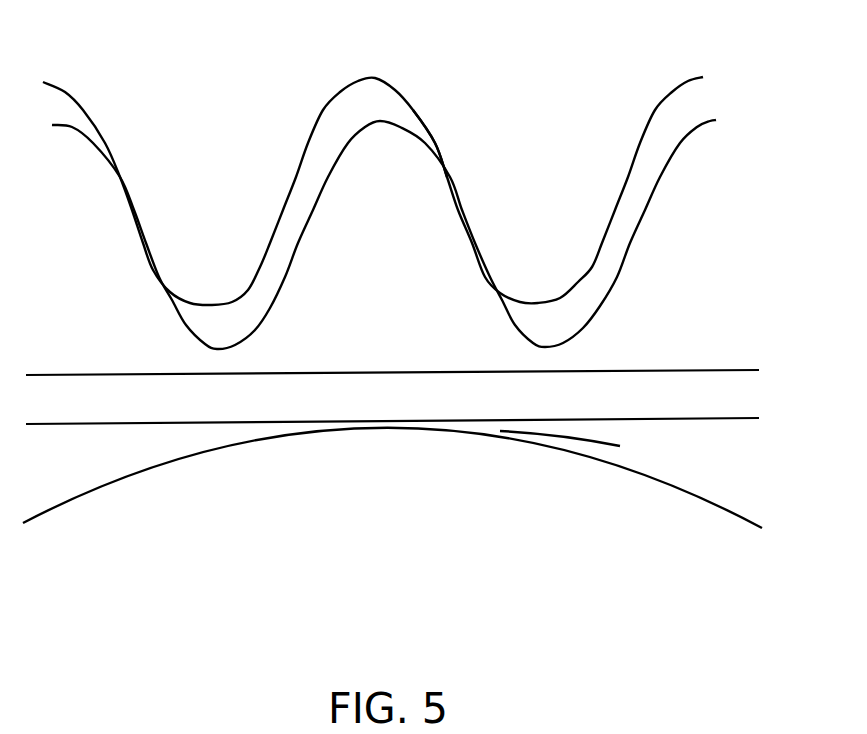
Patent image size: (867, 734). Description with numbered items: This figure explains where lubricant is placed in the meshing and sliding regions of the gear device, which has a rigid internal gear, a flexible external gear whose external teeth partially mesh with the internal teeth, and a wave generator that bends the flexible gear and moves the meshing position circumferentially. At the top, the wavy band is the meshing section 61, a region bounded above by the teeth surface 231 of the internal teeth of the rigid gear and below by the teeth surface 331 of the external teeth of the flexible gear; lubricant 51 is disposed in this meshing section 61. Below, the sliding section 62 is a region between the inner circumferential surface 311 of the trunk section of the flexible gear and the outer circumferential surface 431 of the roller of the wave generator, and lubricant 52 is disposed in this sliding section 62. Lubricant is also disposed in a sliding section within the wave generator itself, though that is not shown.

The meshing section 61 is at (379, 181).
The teeth surface 231 is at (373, 81).
The teeth surface 331 is at (388, 122).
The lubricant 51 is at (427, 134).
The inner circumferential surface 311 is at (682, 420).
The outer circumferential surface 431 is at (710, 497).
The sliding section 62 is at (437, 495).
The lubricant 52 is at (545, 435).